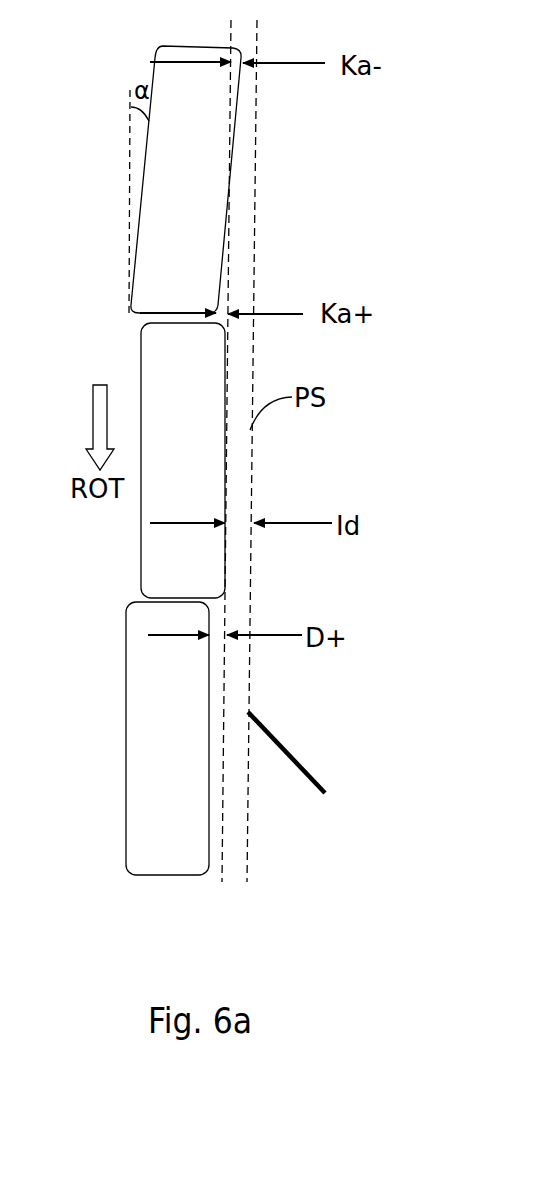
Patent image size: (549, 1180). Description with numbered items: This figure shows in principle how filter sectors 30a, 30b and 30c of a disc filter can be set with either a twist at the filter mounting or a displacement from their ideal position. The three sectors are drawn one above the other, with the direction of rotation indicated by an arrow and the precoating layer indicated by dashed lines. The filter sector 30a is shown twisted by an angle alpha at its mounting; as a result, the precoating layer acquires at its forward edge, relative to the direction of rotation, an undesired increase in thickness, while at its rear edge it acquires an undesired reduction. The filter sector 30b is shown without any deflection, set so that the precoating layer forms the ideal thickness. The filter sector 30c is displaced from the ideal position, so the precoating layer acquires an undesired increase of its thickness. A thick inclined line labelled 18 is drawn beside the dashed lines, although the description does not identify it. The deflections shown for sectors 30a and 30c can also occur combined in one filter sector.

The filter sector 30a is at (208, 194).
The filter sector 30b is at (207, 458).
The filter sector 30c is at (187, 745).
The brush 18 is at (285, 743).